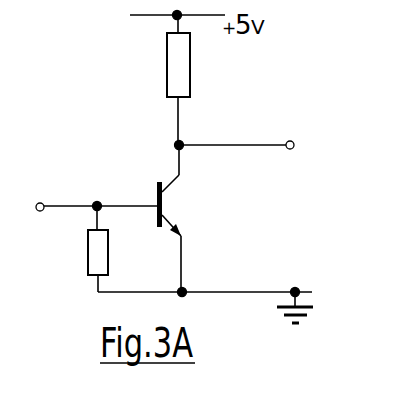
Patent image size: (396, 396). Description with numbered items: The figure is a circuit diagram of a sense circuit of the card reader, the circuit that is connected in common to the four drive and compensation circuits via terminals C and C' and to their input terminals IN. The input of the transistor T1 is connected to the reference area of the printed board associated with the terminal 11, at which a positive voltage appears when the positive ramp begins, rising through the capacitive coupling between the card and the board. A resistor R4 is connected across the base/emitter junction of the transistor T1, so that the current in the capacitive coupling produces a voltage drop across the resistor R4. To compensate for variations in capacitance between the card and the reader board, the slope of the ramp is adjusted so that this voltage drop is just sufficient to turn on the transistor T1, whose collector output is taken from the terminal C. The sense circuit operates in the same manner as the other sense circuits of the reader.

The terminal 11 is at (59, 212).
The terminal C is at (272, 159).
The transistor T1 is at (184, 218).
The resistor R4 is at (108, 252).